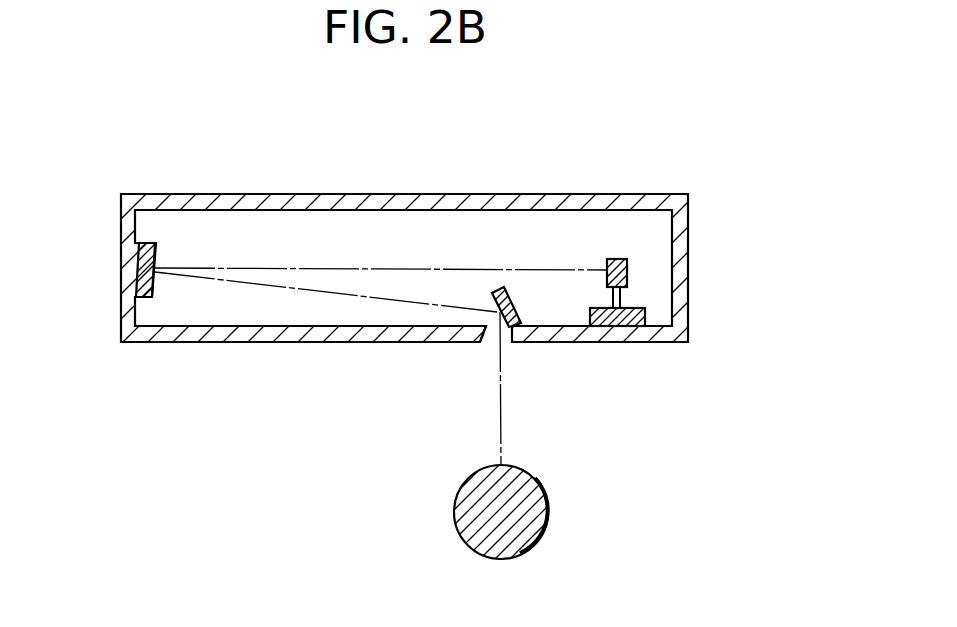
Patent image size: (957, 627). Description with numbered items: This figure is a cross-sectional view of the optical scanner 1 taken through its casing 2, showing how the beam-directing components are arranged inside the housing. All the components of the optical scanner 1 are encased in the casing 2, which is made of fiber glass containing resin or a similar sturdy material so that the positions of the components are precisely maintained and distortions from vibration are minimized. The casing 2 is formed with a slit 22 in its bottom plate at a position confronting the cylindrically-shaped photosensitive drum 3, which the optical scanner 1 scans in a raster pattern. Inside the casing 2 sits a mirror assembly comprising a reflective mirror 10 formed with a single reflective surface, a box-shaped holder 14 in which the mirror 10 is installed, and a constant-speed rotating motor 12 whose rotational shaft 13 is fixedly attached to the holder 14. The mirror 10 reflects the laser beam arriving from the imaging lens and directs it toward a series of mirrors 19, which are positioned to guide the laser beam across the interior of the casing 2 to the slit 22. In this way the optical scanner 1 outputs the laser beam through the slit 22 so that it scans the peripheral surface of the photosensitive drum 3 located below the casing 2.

The optical scanner 1 is at (740, 115).
The casing 2 is at (703, 181).
The photosensitive drum 3 is at (542, 488).
The reflective mirror 10 is at (623, 260).
The constant-speed rotating motor 12 is at (622, 332).
The rotational shaft 13 is at (620, 298).
The box-shaped holder 14 is at (609, 235).
The mirrors 19 is at (122, 278).
The slit 22 is at (493, 340).